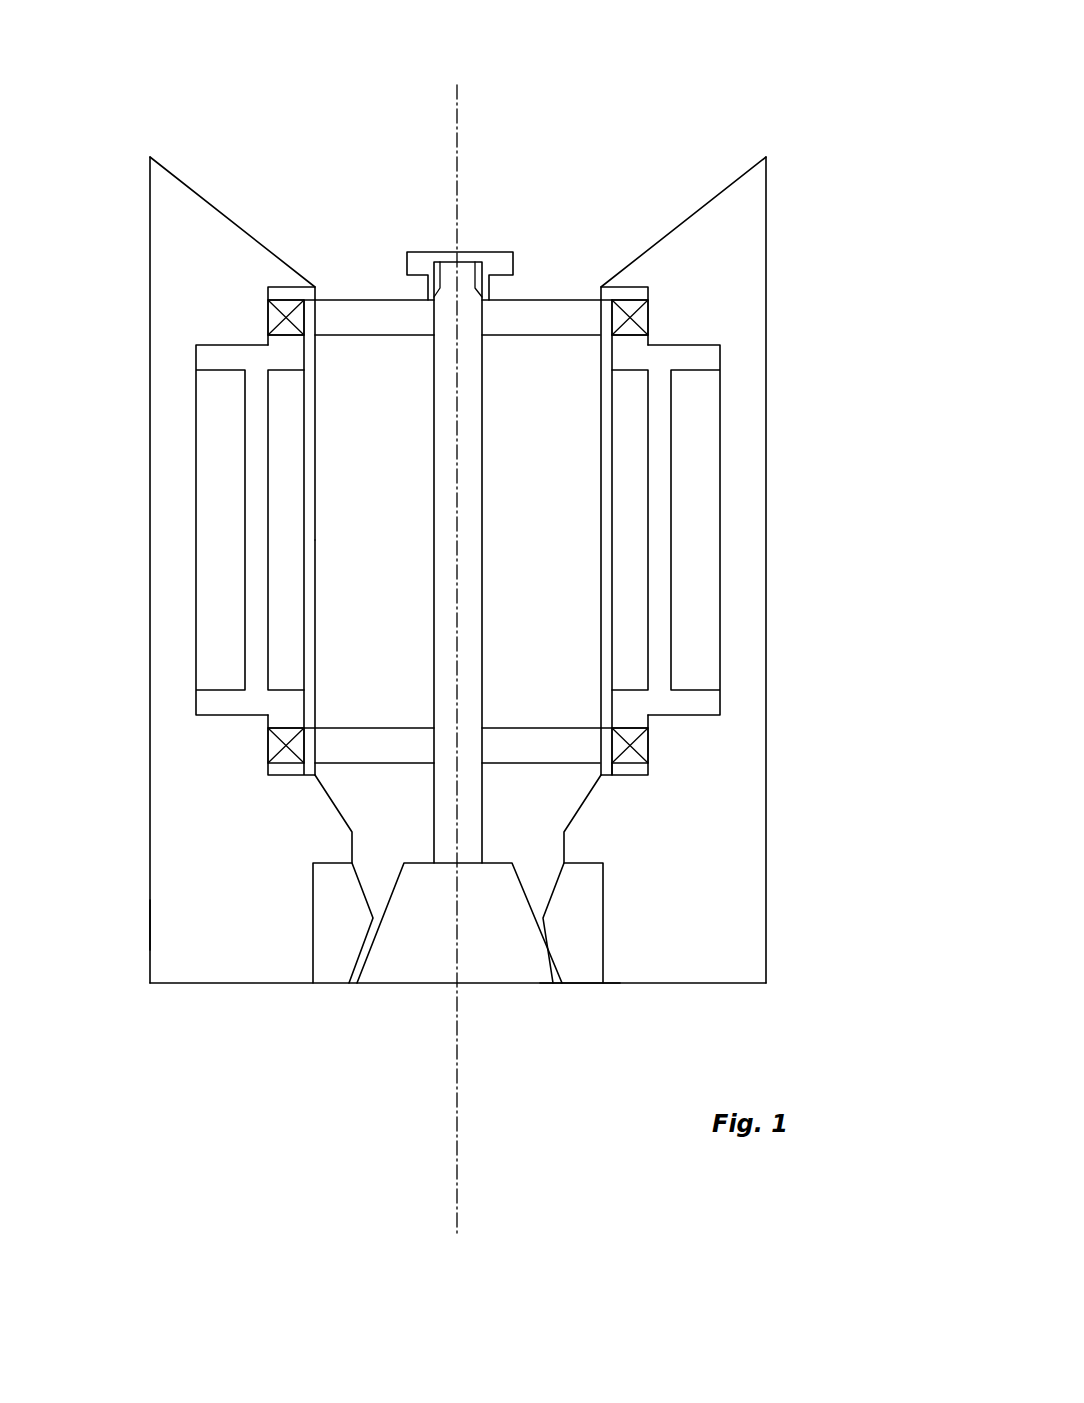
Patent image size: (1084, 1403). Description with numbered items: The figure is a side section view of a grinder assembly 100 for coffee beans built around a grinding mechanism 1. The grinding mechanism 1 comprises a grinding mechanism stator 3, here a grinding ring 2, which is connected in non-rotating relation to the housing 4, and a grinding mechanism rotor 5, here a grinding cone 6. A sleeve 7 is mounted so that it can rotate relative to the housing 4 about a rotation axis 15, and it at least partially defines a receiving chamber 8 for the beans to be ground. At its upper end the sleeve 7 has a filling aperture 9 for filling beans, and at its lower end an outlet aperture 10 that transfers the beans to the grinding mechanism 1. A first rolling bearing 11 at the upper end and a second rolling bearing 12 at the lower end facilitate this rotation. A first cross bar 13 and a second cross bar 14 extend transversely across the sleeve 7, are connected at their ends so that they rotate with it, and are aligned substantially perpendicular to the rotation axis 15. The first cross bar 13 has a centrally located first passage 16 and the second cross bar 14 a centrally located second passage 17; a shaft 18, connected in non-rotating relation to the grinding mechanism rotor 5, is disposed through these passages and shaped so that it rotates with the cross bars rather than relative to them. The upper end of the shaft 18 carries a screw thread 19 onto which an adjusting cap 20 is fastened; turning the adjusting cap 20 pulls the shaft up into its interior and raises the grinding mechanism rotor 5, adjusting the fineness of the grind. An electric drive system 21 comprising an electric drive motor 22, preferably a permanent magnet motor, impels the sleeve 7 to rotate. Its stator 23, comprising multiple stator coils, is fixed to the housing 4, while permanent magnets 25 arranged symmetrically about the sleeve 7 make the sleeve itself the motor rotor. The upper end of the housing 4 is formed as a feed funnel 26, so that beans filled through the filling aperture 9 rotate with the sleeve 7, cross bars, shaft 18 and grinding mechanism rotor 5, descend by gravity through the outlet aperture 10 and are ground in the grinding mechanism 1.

The grinder assembly 100 is at (804, 60).
The grinding mechanism 1 is at (287, 920).
The grinding ring 2 is at (583, 963).
The grinding mechanism stator 3 is at (585, 1051).
The housing 4 is at (743, 800).
The grinding mechanism rotor 5 is at (392, 1019).
The grinding cone 6 is at (422, 970).
The sleeve 7 is at (313, 447).
The receiving chamber 8 is at (548, 511).
The filling aperture 9 is at (554, 249).
The outlet aperture 10 is at (510, 798).
The first rolling bearing 11 is at (628, 307).
The second rolling bearing 12 is at (630, 753).
The first cross bar 13 is at (532, 315).
The second cross bar 14 is at (527, 740).
The rotation axis 15 is at (458, 152).
The first passage 16 is at (413, 352).
The second passage 17 is at (420, 702).
The shaft 18 is at (472, 577).
The screw thread 19 is at (487, 277).
The adjusting cap 20 is at (423, 260).
The drive system 21 is at (730, 283).
The electric drive motor 22 is at (716, 356).
The stator 23 is at (700, 517).
The permanent magnets 25 is at (290, 502).
The feed funnel 26 is at (222, 96).